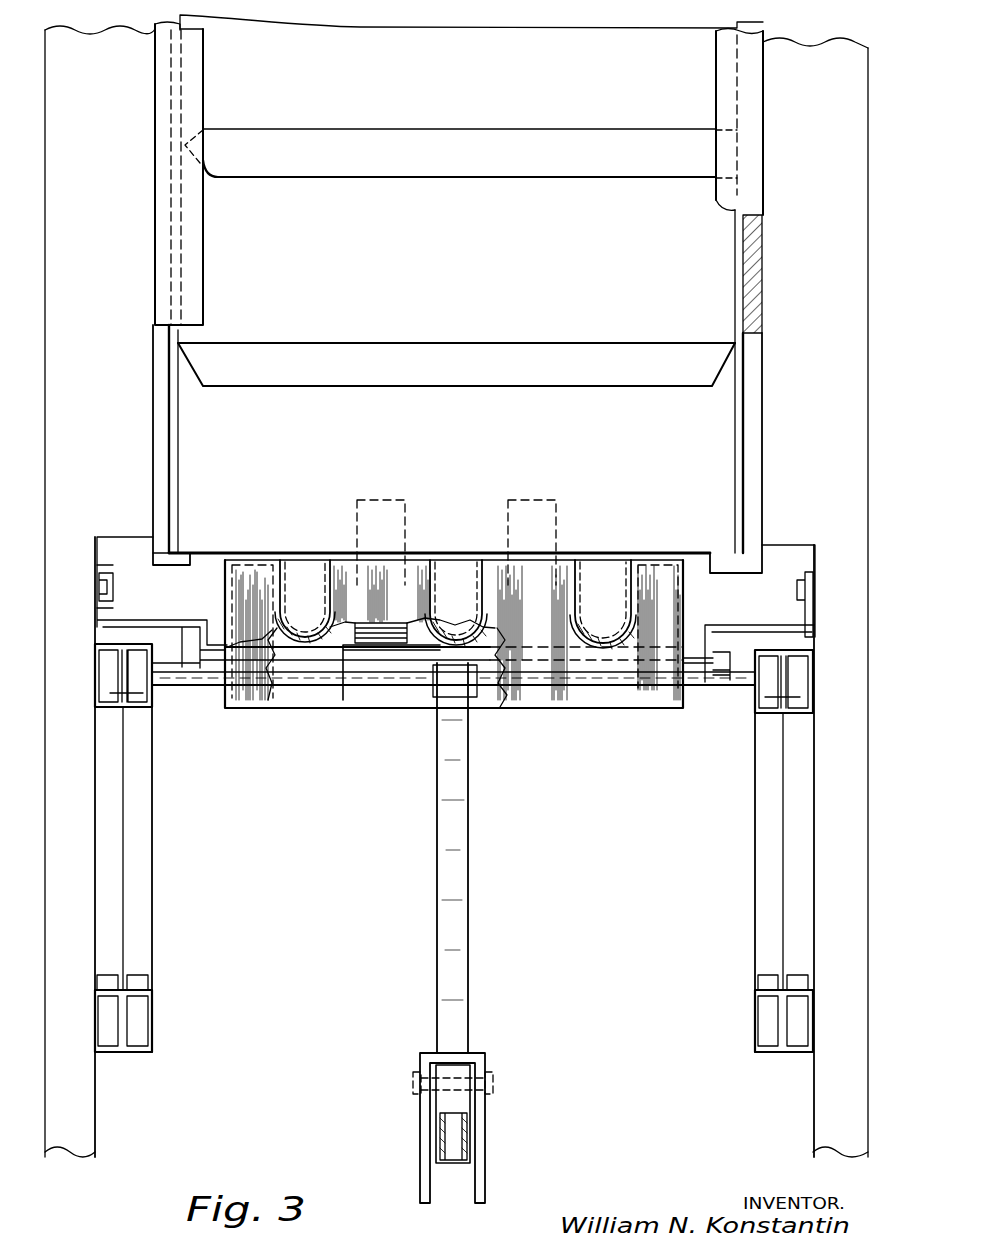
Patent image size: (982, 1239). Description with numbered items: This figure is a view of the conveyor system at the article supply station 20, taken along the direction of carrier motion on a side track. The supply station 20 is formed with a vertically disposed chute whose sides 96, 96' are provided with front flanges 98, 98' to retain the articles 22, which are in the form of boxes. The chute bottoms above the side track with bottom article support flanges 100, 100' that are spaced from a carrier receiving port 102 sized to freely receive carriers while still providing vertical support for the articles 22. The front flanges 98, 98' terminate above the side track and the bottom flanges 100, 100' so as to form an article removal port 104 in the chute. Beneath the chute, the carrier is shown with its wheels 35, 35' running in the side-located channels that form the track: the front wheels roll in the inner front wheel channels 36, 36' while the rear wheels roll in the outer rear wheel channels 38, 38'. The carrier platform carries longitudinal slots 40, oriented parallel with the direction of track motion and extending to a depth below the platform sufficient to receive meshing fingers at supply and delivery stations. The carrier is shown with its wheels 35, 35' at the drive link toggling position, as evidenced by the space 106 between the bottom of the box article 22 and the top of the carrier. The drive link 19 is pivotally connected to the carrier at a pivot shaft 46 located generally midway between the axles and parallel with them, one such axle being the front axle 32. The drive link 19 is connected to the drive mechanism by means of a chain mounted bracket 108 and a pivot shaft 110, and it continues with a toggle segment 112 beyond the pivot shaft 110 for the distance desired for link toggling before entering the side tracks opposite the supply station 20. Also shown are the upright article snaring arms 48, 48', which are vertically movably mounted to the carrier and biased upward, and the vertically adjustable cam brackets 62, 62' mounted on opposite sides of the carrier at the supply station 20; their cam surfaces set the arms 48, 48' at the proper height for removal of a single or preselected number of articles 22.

The drive link 19 is at (468, 815).
The article supply station 20 is at (785, 358).
The articles 22 is at (228, 72).
The front axle 32 is at (698, 683).
The wheels 35 is at (158, 696).
The wheels 35' is at (759, 699).
The front wheel channel 36 is at (170, 879).
The front wheel channel 36' is at (743, 882).
The rear wheel channel 38 is at (101, 847).
The rear wheel channel 38' is at (805, 851).
The slots 40 is at (330, 598).
The pivot shaft 46 is at (405, 683).
The article snaring arm 48 is at (361, 526).
The article snaring arm 48' is at (551, 526).
The cam bracket 62 is at (84, 586).
The cam bracket 62' is at (827, 604).
The chute side 96 is at (145, 445).
The chute side 96' is at (767, 453).
The front flange 98 is at (152, 195).
The front flange 98' is at (719, 138).
The bottom article support flange 100 is at (162, 602).
The bottom article support flange 100' is at (749, 613).
The carrier receiving port 102 is at (213, 562).
The article removal port 104 is at (193, 332).
The space 106 is at (292, 557).
The chain mounted bracket 108 is at (458, 1100).
The pivot shaft 110 is at (492, 1085).
The toggle segment 112 is at (480, 1195).